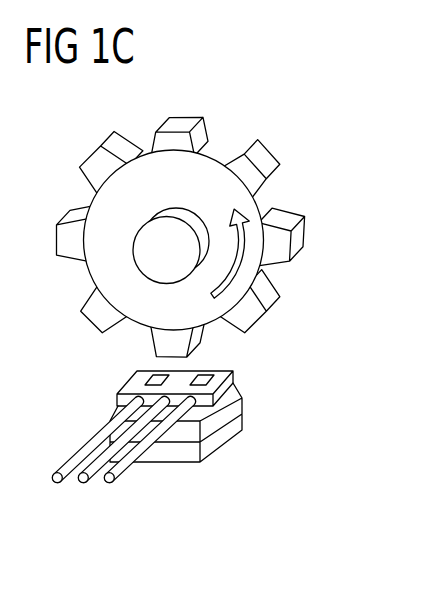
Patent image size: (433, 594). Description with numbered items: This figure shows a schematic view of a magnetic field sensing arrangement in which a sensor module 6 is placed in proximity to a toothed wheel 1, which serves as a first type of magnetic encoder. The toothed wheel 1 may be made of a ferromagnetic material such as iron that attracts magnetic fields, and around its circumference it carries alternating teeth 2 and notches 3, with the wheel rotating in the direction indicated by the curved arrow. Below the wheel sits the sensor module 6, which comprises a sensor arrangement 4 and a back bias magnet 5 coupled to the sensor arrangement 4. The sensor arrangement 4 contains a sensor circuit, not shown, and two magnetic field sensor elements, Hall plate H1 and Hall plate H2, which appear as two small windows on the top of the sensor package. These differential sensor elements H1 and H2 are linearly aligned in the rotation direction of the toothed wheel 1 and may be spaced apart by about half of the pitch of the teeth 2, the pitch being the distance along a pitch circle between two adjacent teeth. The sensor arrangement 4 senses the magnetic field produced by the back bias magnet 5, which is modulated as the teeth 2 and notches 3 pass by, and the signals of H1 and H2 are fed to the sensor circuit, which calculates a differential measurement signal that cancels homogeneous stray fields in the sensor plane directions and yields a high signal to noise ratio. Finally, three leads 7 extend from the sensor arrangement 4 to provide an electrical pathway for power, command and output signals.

The toothed wheel 1 is at (206, 172).
The teeth 2 is at (263, 161).
The notches 3 is at (210, 231).
The sensor arrangement 4 is at (173, 376).
The back bias magnet 5 is at (217, 436).
The sensor module 6 is at (156, 436).
The leads 7 is at (78, 418).
The Hall plate H1 is at (147, 374).
The Hall plate H2 is at (204, 377).